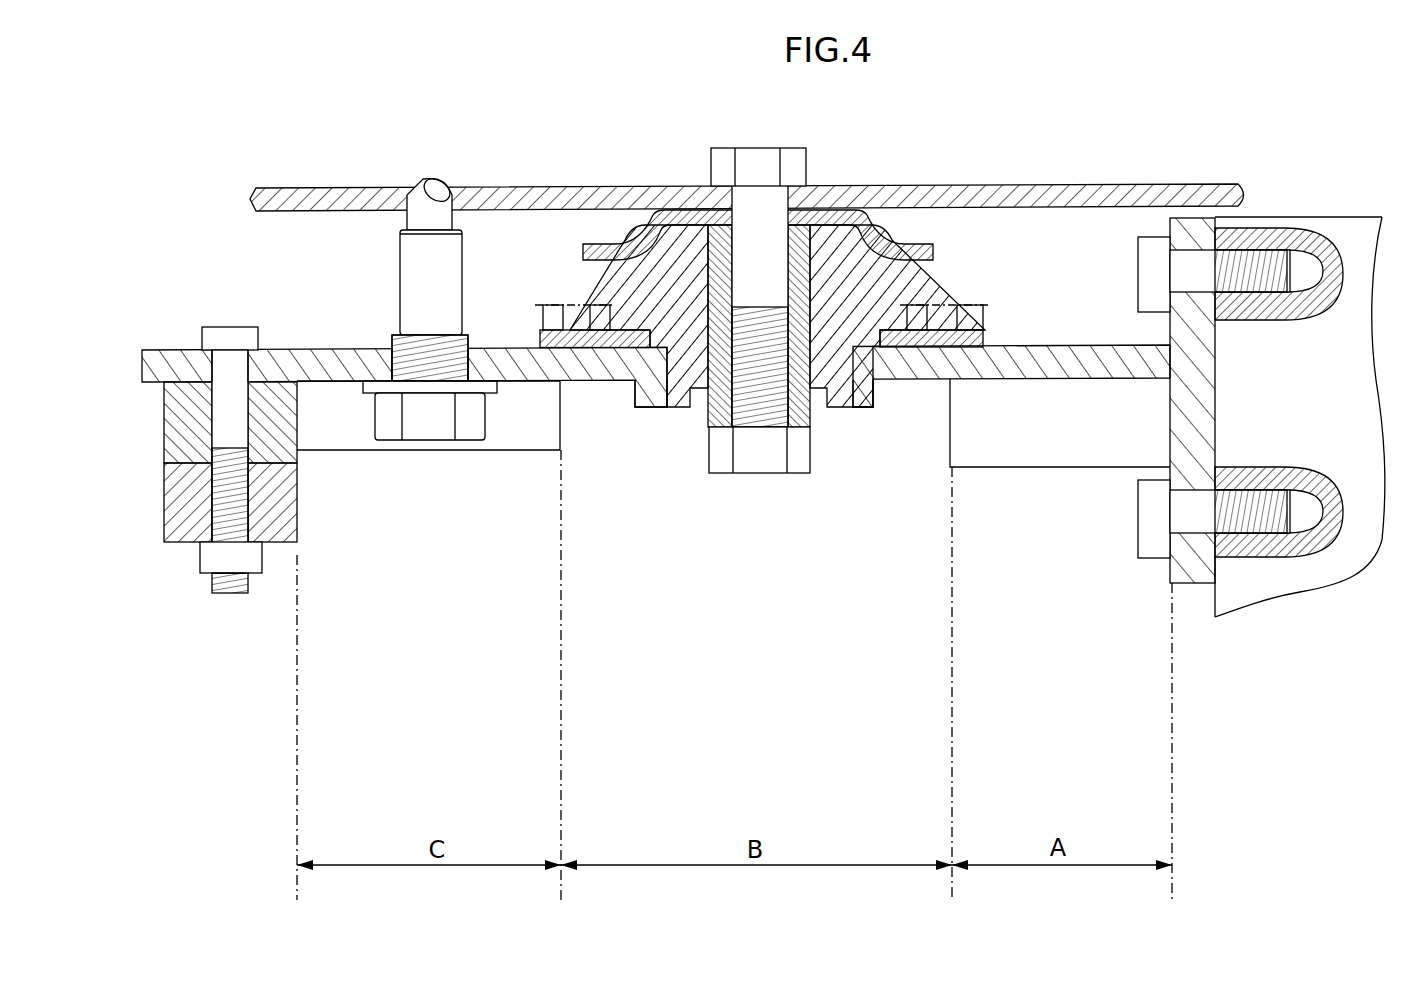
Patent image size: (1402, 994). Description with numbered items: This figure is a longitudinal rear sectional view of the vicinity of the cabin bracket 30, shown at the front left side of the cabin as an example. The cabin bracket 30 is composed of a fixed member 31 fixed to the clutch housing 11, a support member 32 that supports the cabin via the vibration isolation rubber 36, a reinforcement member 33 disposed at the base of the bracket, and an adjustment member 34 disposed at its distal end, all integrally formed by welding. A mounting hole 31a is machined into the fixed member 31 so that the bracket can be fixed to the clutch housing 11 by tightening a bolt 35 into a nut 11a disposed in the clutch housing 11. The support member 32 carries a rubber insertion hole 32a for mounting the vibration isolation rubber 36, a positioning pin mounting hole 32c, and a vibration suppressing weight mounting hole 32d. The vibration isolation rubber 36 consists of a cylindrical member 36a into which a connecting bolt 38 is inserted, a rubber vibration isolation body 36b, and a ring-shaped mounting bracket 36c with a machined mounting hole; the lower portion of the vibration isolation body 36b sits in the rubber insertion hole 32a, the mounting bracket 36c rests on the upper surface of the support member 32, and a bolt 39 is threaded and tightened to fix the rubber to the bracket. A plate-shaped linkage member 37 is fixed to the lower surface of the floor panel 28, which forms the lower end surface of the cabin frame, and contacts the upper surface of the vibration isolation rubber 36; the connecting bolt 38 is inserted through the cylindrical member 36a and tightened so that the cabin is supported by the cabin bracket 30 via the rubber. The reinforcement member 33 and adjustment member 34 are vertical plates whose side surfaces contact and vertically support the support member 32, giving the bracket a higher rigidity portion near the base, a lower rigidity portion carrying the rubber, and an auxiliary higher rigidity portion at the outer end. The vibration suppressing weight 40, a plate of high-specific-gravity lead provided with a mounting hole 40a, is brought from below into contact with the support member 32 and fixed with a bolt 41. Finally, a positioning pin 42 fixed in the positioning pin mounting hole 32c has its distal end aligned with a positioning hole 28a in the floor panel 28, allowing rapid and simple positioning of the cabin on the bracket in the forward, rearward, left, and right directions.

The clutch housing 11 is at (1258, 597).
The nut 11a is at (1305, 270).
The floor panel 28 is at (965, 188).
The positioning hole 28a is at (430, 185).
The cabin bracket 30 is at (1080, 333).
The fixed member 31 is at (1220, 385).
The mounting hole 31a is at (1195, 240).
The support member 32 is at (1103, 345).
The rubber insertion hole 32a is at (640, 400).
The positioning pin mounting hole 32c is at (405, 350).
The vibration suppressing weight mounting hole 32d is at (228, 345).
The reinforcement member 33 is at (1050, 468).
The adjustment member 34 is at (518, 450).
The bolt 35 is at (1148, 245).
The vibration isolation rubber 36 is at (660, 410).
The cylindrical member 36a is at (815, 290).
The vibration isolation body 36b is at (880, 260).
The mounting bracket 36c is at (900, 385).
The linkage member 37 is at (840, 210).
The connecting bolt 38 is at (760, 165).
The bolt 39 is at (558, 325).
The vibration suppressing weight 40 is at (164, 447).
The mounting hole 40a is at (240, 412).
The bolt 41 is at (232, 330).
The positioning pin 42 is at (425, 440).